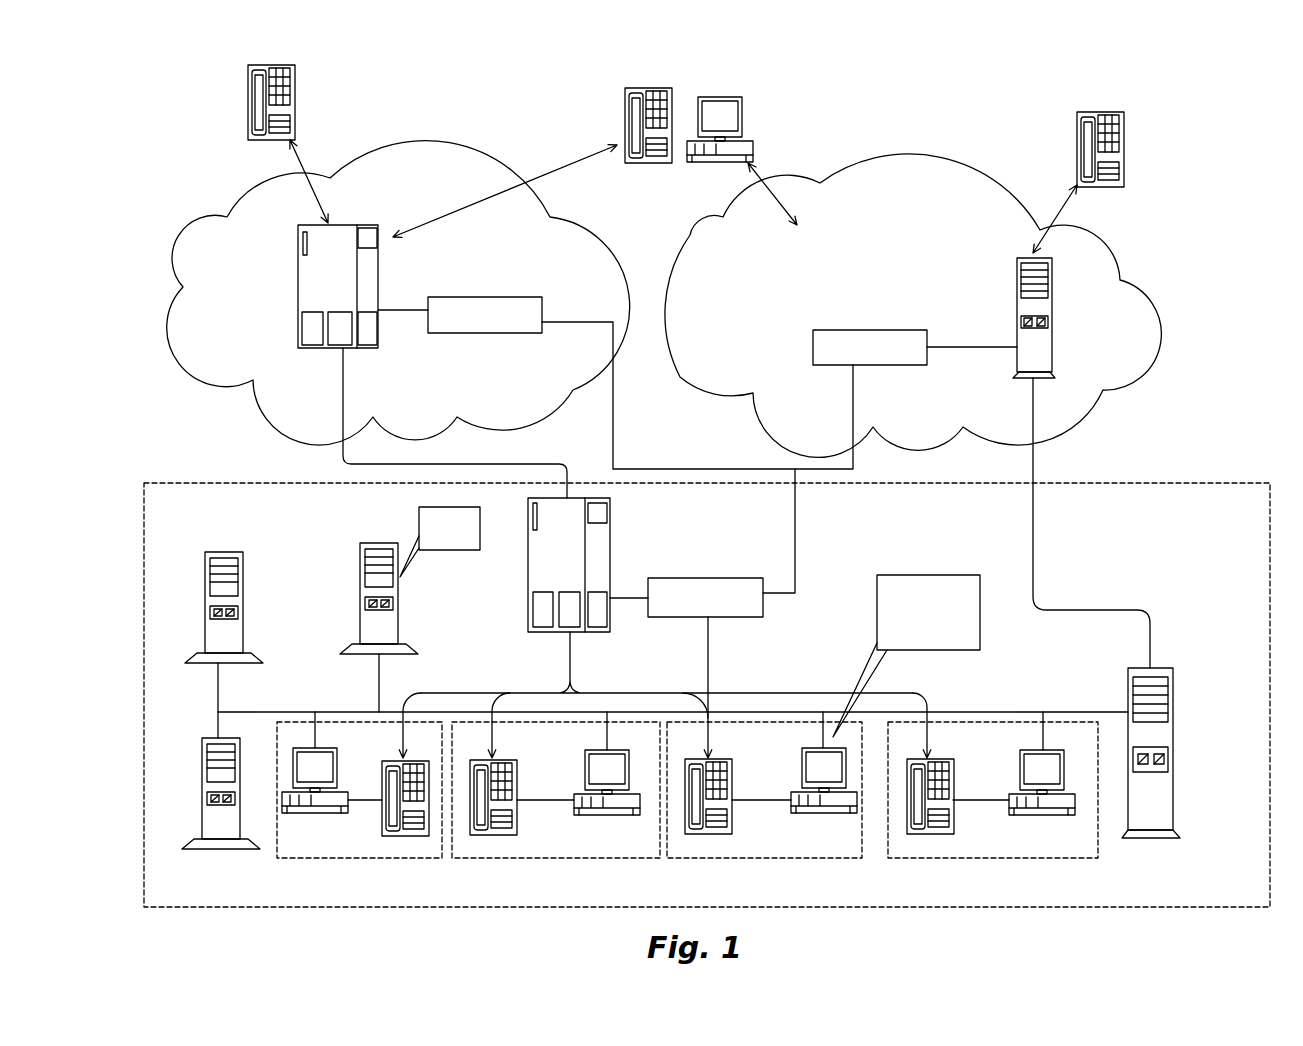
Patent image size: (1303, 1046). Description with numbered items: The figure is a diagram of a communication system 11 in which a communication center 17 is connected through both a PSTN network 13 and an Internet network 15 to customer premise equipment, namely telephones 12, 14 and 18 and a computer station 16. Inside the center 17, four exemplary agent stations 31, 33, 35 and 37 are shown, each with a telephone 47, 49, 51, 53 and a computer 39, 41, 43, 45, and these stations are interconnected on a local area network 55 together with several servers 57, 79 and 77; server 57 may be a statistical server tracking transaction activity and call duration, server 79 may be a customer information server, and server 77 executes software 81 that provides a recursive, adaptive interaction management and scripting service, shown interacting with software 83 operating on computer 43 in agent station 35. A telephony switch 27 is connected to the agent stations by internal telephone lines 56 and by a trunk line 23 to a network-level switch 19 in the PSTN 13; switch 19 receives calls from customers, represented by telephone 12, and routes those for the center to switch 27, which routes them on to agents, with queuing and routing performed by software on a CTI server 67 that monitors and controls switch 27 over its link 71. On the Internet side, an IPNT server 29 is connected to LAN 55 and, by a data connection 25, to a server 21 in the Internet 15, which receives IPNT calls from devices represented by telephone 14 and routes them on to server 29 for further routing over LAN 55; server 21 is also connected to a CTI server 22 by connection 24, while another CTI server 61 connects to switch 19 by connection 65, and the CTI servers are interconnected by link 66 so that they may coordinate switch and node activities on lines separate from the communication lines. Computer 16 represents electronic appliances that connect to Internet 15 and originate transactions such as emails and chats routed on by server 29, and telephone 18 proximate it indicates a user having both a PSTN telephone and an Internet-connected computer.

The communication network 11 is at (420, 122).
The telephone 12 is at (250, 127).
The PSTN network 13 is at (197, 217).
The telephone 14 is at (1125, 147).
The Internet network 15 is at (678, 252).
The computer 16 is at (747, 127).
The communication center 17 is at (1138, 480).
The telephone 18 is at (648, 85).
The network-level switch 19 is at (298, 303).
The server 21 is at (1017, 332).
The CTI server 22 is at (812, 350).
The trunk line 23 is at (340, 417).
The connection 24 is at (968, 345).
The data connection 25 is at (1033, 425).
The telephony switch 27 is at (528, 610).
The IPNT server 29 is at (1173, 710).
The agent station 31 is at (378, 858).
The agent station 33 is at (565, 857).
The agent station 35 is at (781, 861).
The agent station 37 is at (1005, 861).
The computer 39 is at (340, 813).
The computer 41 is at (582, 815).
The computer 43 is at (795, 813).
The computer 45 is at (1020, 813).
The telephone 47 is at (382, 780).
The telephone 49 is at (517, 790).
The telephone 51 is at (732, 788).
The telephone 53 is at (953, 792).
The local area network 55 is at (353, 708).
The internal telephone lines 56 is at (510, 690).
The server 57 is at (200, 797).
The CTI server 61 is at (487, 333).
The connection 65 is at (393, 313).
The link 66 is at (653, 460).
The CTI server 67 is at (702, 617).
The CTI link 71 is at (610, 597).
The server 77 is at (358, 623).
The server 79 is at (203, 620).
The software 81 is at (419, 538).
The software 83 is at (913, 575).